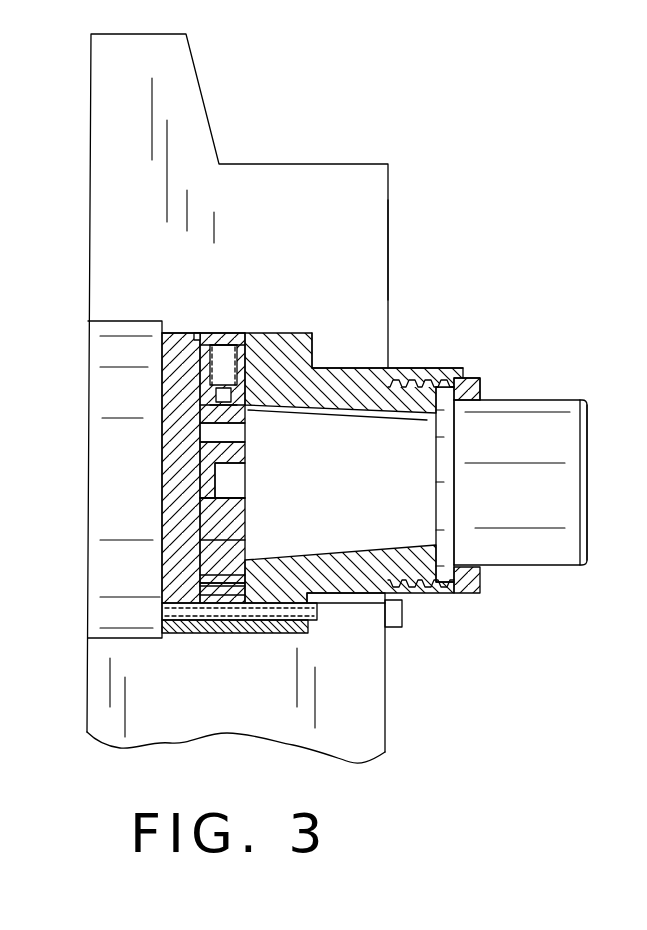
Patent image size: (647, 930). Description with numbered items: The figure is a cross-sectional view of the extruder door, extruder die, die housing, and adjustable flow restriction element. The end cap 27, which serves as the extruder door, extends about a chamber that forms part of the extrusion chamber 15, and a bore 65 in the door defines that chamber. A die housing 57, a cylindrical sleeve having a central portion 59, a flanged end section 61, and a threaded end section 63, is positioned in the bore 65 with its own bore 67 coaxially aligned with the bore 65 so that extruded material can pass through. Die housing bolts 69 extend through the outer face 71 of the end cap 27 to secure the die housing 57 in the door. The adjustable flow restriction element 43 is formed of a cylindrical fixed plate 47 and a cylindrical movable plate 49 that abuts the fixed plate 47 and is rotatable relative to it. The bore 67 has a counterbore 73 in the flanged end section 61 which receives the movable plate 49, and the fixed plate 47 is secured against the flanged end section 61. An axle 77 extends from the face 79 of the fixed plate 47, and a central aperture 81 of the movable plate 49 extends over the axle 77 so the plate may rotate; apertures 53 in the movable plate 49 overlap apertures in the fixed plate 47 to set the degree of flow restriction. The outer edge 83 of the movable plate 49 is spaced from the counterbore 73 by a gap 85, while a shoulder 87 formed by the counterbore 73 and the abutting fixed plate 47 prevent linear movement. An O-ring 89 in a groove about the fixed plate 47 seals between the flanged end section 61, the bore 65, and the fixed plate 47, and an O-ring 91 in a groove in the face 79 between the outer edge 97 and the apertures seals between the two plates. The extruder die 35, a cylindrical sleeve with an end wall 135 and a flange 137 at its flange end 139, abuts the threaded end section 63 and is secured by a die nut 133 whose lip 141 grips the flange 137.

The end cap 27 is at (263, 187).
The outer face 71 is at (388, 255).
The extrusion chamber 15 is at (107, 442).
The fixed plate 47 is at (178, 522).
The O-ring 91 is at (205, 567).
The O-ring 89 is at (201, 333).
The bore 65 is at (222, 333).
The outer edge 97 is at (177, 333).
The apertures 53 is at (233, 433).
The face 79 is at (225, 447).
The central aperture 81 is at (230, 484).
The axle 77 is at (240, 503).
The shoulder 87 is at (230, 560).
The movable plate 49 is at (210, 548).
The gap 85 is at (227, 592).
The adjustable flow restriction element 43 is at (283, 357).
The flanged end section 61 is at (308, 335).
The central portion 59 is at (353, 383).
The bore 67 is at (381, 548).
The threaded end section 63 is at (423, 367).
The lip 141 is at (482, 390).
The die nut 133 is at (449, 586).
The flange end 139 is at (435, 483).
The flange 137 is at (445, 457).
The extruder die 35 is at (548, 543).
The end wall 135 is at (587, 475).
The die housing 57 is at (352, 558).
The counterbore 73 is at (197, 597).
The outer edge 83 is at (235, 588).
The die housing bolts 69 is at (395, 620).